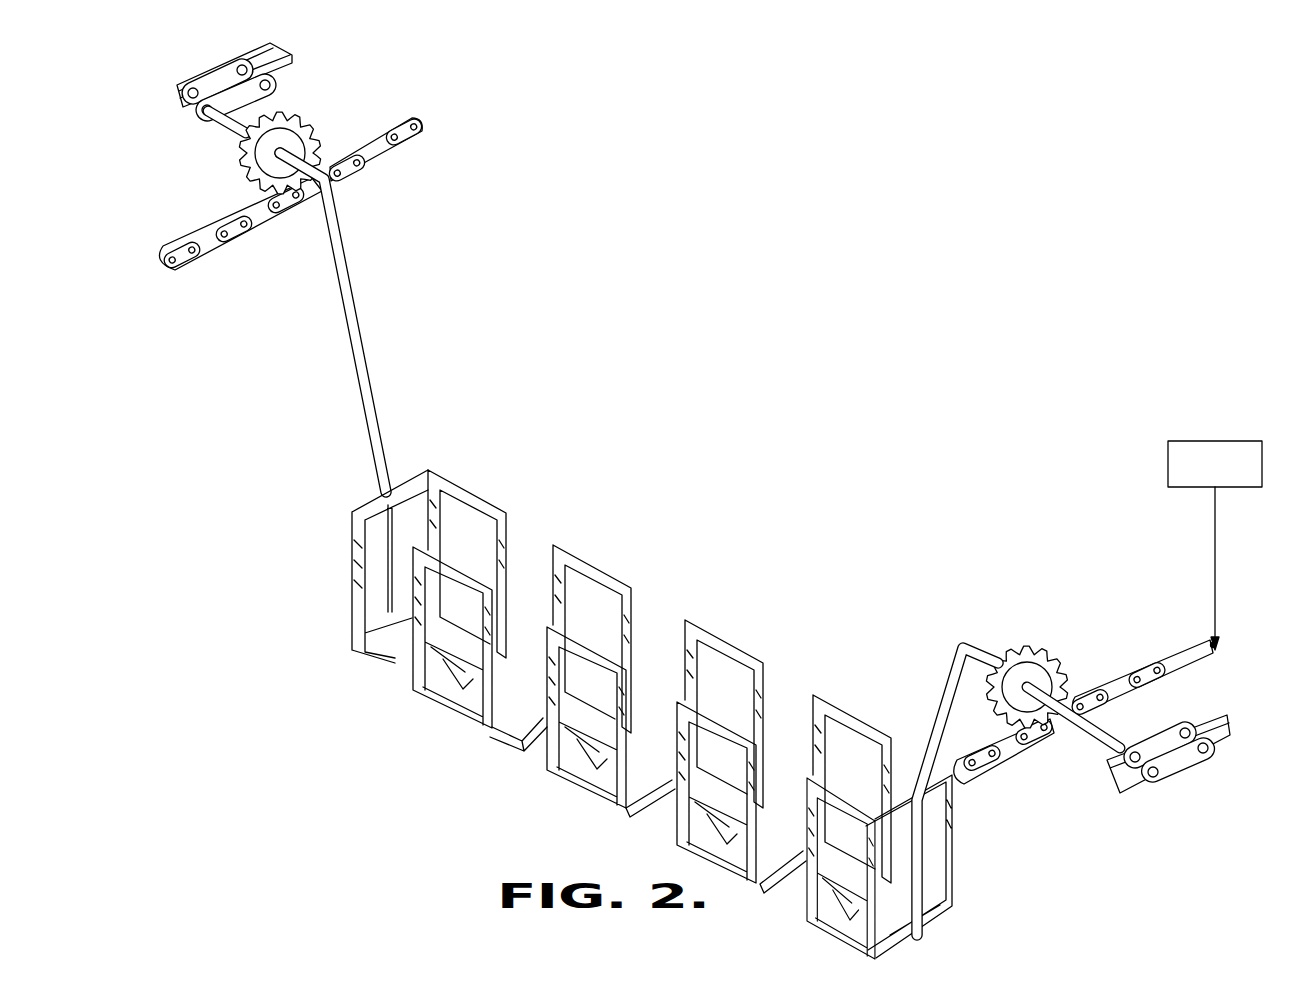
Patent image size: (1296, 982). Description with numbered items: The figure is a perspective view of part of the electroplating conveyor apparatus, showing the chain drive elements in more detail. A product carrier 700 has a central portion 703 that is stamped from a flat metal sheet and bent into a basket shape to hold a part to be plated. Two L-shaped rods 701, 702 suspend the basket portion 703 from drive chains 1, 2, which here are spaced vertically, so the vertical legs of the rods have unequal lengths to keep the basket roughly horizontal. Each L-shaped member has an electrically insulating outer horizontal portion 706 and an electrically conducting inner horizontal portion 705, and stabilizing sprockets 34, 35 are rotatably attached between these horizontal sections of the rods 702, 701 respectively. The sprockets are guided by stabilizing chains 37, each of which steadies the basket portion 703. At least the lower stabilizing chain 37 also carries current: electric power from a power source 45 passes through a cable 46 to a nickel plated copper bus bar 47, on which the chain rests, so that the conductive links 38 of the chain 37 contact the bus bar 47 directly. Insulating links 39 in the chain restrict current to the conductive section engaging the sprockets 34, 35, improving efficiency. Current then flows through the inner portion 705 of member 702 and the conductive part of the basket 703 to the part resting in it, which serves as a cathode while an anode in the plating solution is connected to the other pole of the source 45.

The drive chain 1 is at (179, 119).
The drive chain 2 is at (1130, 797).
The stabilizing sprocket 34 is at (303, 127).
The stabilizing sprocket 35 is at (1053, 652).
The stabilizing chain 37 is at (415, 120).
The electrically conductive link 38 is at (297, 207).
The insulating link 39 is at (366, 166).
The power source 45 is at (1233, 441).
The cable 46 is at (1218, 546).
The bus bar 47 is at (1222, 650).
The product carrier 700 is at (356, 742).
The L-shaped rod 701 is at (348, 252).
The L-shaped rod 702 is at (933, 717).
The central portion 703 is at (488, 732).
The inner horizontal portion 705 is at (305, 150).
The outer horizontal portion 706 is at (223, 123).